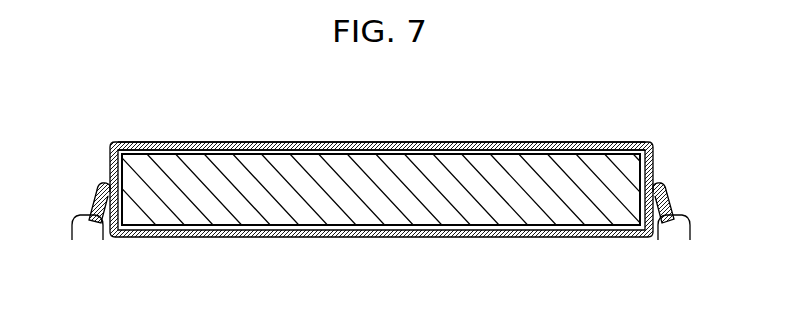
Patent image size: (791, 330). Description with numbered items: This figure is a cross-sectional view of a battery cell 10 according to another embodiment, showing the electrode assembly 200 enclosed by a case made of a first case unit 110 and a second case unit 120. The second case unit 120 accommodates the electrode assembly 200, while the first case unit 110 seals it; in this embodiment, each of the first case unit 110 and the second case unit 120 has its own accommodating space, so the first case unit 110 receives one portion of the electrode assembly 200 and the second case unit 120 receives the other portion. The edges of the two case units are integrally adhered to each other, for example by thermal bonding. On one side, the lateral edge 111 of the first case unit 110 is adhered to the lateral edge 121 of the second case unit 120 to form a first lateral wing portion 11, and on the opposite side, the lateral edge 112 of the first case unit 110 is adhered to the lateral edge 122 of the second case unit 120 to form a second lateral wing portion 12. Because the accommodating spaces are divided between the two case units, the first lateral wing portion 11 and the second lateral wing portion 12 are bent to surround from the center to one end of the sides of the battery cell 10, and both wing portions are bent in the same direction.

The battery cell 10 is at (637, 69).
The first case unit 110 is at (215, 237).
The second case unit 120 is at (123, 142).
The electrode assembly 200 is at (230, 178).
The first lateral wing portion 11 is at (77, 251).
The lateral edge of the first case unit 111 is at (102, 227).
The lateral edge of the second case unit 121 is at (117, 280).
The second lateral wing portion 12 is at (685, 250).
The lateral edge of the first case unit 112 is at (658, 228).
The lateral edge of the second case unit 122 is at (647, 290).